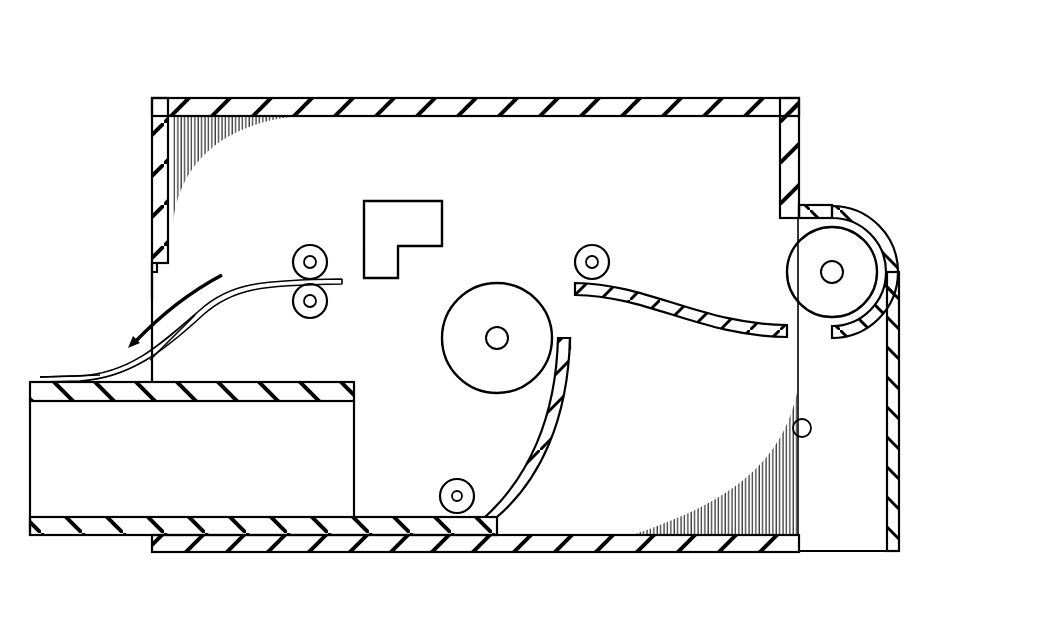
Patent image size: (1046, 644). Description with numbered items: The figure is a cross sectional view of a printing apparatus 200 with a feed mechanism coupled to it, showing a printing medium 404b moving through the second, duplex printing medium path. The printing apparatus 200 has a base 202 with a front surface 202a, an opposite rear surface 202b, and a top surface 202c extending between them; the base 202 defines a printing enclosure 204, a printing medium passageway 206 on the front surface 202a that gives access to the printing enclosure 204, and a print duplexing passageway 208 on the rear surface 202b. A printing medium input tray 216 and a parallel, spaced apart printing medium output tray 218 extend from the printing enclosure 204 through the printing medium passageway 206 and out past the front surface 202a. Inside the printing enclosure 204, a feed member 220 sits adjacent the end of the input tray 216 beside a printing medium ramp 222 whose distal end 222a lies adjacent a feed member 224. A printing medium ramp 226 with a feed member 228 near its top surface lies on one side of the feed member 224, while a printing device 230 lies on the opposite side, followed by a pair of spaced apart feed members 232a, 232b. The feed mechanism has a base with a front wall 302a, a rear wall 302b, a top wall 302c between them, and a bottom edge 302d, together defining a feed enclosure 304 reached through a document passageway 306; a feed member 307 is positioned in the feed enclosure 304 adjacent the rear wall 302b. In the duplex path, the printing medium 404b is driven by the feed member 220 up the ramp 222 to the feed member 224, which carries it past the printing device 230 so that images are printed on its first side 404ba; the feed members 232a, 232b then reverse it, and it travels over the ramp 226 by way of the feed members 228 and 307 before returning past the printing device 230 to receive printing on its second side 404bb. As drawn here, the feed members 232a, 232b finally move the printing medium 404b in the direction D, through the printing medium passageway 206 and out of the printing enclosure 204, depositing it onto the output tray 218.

The printing apparatus 200 is at (684, 57).
The base 202 is at (275, 92).
The front surface 202a is at (152, 140).
The rear surface 202b is at (800, 130).
The top surface 202c is at (474, 97).
The printing enclosure 204 is at (549, 159).
The printing medium passageway 206 is at (152, 272).
The print duplexing passageway 208 is at (790, 220).
The printing medium input tray 216 is at (70, 537).
The printing medium output tray 218 is at (84, 402).
The feed member 220 is at (440, 490).
The printing medium ramp 222 is at (546, 458).
The distal end 222a is at (577, 339).
The feed member 224 is at (492, 393).
The printing medium ramp 226 is at (722, 337).
The feed member 228 is at (598, 246).
The printing device 230 is at (400, 201).
The feed member 232a is at (306, 245).
The feed member 232b is at (313, 318).
The front wall 302a is at (893, 552).
The rear wall 302b is at (832, 205).
The top wall 302c is at (899, 268).
The bottom edge 302d is at (794, 430).
The feed enclosure 304 is at (863, 505).
The document passageway 306 is at (836, 552).
The feed member 307 is at (788, 294).
The printing medium 404b is at (219, 312).
The first side 404ba is at (178, 378).
The second side 404bb is at (96, 378).
The direction D is at (197, 283).